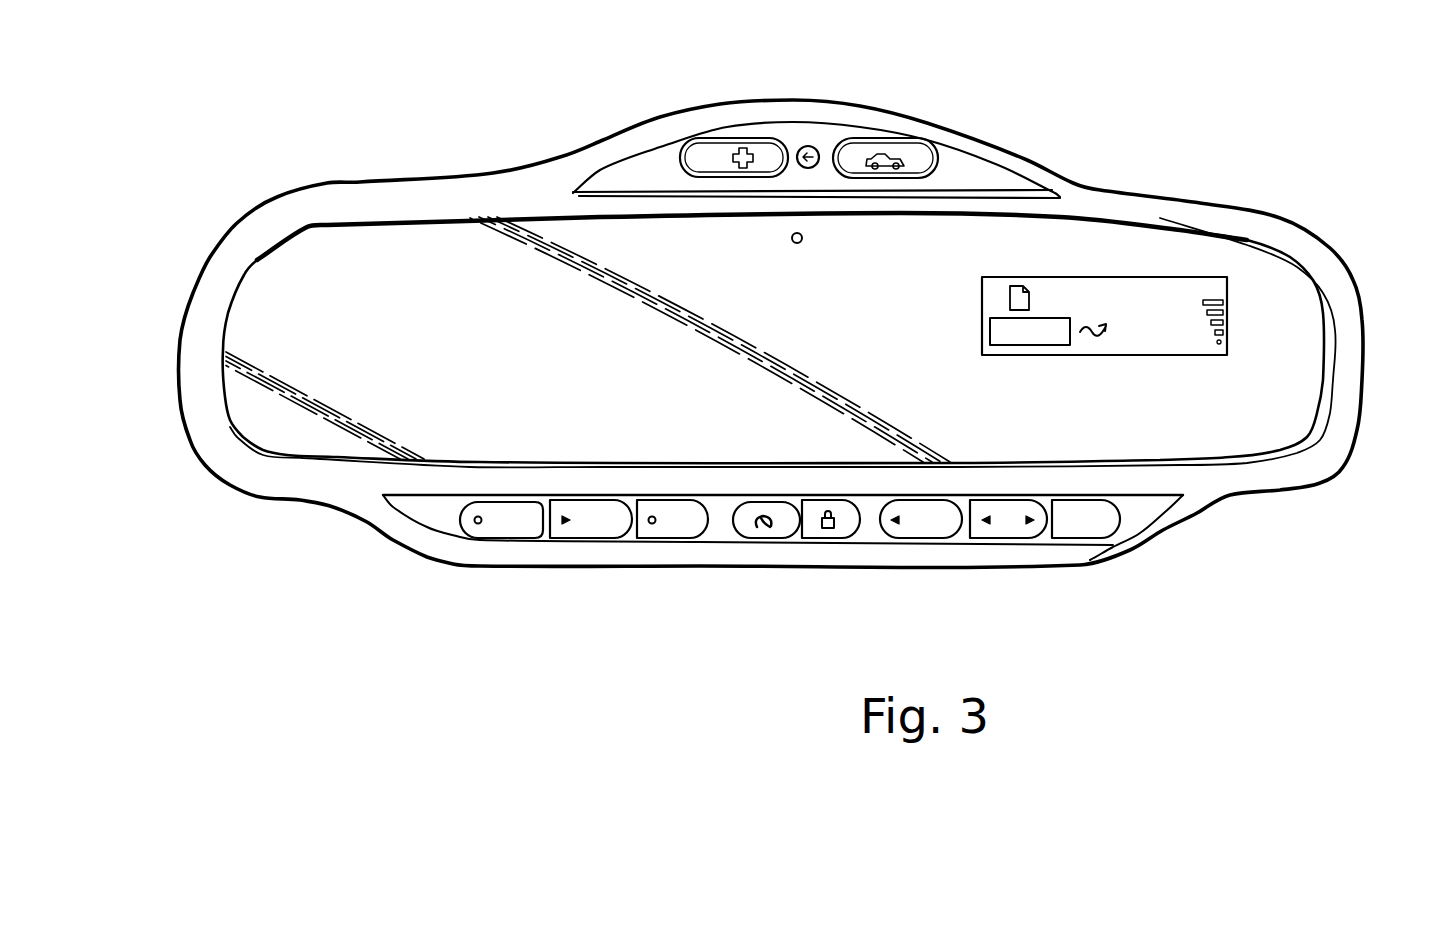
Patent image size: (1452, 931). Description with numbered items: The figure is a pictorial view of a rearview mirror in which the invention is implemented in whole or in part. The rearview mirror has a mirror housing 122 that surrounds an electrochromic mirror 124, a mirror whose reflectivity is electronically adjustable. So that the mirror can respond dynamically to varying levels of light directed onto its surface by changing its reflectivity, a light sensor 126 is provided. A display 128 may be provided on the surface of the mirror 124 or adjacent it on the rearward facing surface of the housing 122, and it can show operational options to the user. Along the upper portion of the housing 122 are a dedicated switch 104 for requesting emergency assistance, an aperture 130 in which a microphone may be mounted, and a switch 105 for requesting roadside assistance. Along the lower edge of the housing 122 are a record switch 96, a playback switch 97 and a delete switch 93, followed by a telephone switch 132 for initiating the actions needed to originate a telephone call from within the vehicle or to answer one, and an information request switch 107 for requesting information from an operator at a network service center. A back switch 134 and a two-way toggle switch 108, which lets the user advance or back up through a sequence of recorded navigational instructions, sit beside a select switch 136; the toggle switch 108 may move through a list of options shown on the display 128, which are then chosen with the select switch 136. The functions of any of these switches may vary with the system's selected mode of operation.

The mirror housing 122 is at (193, 362).
The electrochromic mirror 124 is at (1298, 340).
The light sensor 126 is at (791, 237).
The display 128 is at (1118, 288).
The dedicated switch for requesting emergency assistance 104 is at (718, 157).
The aperture 130 is at (813, 148).
The switch for requesting roadside assistance 105 is at (893, 147).
The record switch 96 is at (537, 535).
The playback switch 97 is at (623, 542).
The delete switch 93 is at (697, 543).
The telephone switch 132 is at (757, 537).
The information request switch 107 is at (853, 533).
The back switch 134 is at (920, 537).
The two-way toggle switch 108 is at (1013, 532).
The select switch 136 is at (1108, 530).